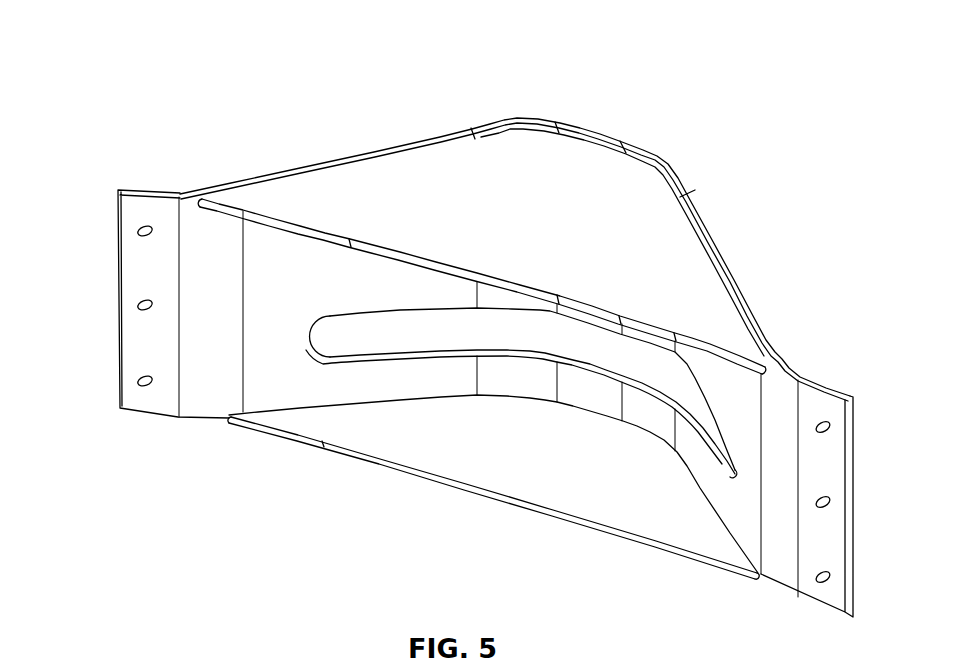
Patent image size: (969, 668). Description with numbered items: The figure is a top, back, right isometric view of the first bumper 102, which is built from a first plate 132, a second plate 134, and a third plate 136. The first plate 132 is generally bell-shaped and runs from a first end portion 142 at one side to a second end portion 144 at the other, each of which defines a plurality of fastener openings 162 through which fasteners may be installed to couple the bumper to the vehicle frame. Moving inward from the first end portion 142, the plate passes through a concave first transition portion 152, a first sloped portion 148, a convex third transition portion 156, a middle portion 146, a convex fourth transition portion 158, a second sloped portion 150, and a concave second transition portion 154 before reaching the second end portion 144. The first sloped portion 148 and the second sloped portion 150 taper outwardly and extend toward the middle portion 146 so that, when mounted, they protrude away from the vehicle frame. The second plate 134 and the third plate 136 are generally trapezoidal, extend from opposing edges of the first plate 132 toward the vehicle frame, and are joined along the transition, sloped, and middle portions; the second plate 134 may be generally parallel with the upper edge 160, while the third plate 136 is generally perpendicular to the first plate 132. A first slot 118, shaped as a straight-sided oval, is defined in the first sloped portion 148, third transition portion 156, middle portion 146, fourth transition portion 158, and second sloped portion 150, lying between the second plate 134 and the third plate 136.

The first bumper 102 is at (131, 18).
The first slot 118 is at (431, 338).
The first plate 132 is at (718, 480).
The second plate 134 is at (518, 171).
The third plate 136 is at (375, 443).
The first end portion 142 is at (822, 404).
The second end portion 144 is at (136, 211).
The middle portion 146 is at (593, 397).
The first sloped portion 148 is at (733, 387).
The second sloped portion 150 is at (305, 252).
The first transition portion 152 is at (786, 382).
The second transition portion 154 is at (222, 222).
The third transition portion 156 is at (658, 430).
The fourth transition portion 158 is at (520, 377).
The upper edge 160 is at (578, 130).
The fastener openings 162 is at (131, 307).